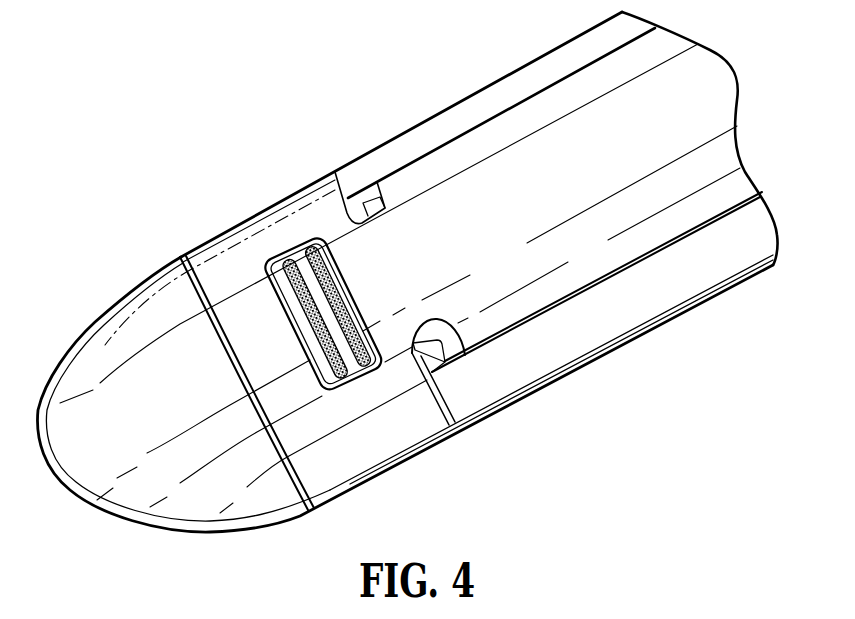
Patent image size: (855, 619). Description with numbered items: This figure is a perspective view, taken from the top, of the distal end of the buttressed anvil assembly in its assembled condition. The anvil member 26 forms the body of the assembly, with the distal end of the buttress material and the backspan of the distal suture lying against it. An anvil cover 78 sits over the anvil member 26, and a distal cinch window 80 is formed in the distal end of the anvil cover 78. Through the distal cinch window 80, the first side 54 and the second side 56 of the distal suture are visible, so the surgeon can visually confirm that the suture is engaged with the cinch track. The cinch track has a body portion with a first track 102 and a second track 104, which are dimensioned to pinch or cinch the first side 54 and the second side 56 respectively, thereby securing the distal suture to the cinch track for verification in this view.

The anvil member 26 is at (207, 534).
The anvil cover 78 is at (483, 88).
The distal cinch window 80 is at (291, 312).
The second side 56 is at (338, 325).
The first track 102 is at (347, 244).
The second track 104 is at (324, 375).
The first side 54 is at (352, 382).